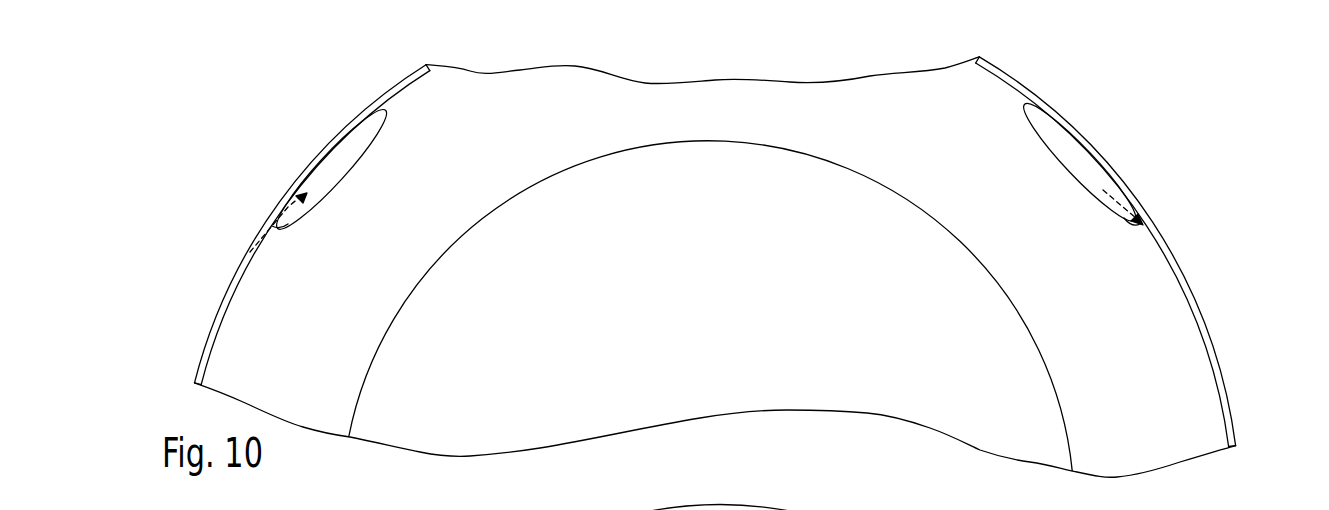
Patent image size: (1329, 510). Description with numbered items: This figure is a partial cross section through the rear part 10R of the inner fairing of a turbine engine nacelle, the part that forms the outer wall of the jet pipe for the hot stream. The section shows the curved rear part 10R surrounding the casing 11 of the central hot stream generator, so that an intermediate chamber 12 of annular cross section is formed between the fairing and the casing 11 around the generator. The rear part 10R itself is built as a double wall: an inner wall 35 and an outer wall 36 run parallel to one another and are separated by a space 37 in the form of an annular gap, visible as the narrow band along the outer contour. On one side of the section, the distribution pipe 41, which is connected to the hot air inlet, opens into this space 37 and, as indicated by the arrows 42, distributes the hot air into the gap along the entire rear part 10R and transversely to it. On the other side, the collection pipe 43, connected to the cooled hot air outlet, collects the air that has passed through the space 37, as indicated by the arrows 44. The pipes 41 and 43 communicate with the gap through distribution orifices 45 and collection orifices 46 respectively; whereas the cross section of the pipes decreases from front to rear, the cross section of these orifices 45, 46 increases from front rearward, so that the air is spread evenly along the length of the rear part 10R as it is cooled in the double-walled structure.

The rear part of the inner fairing 10R is at (1181, 204).
The casing 11 is at (722, 142).
The intermediate chamber 12 is at (452, 147).
The inner wall 35 is at (228, 313).
The outer wall 36 is at (227, 290).
The space 37 is at (1193, 292).
The distribution pipe 41 is at (1057, 137).
The arrows 42 is at (1103, 190).
The collection pipe 43 is at (335, 163).
The arrows 44 is at (288, 207).
The distribution orifices 45 is at (1130, 228).
The collection orifices 46 is at (284, 229).